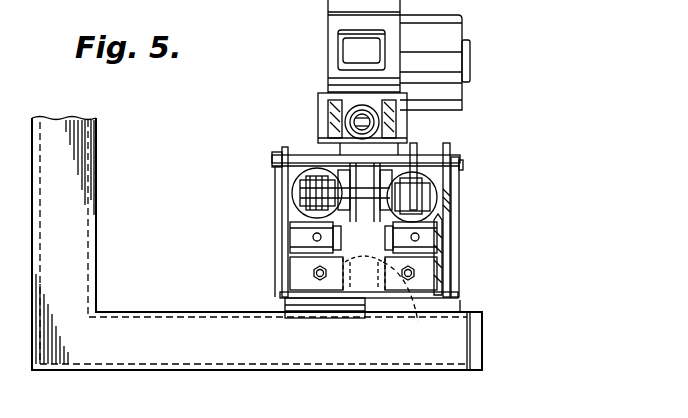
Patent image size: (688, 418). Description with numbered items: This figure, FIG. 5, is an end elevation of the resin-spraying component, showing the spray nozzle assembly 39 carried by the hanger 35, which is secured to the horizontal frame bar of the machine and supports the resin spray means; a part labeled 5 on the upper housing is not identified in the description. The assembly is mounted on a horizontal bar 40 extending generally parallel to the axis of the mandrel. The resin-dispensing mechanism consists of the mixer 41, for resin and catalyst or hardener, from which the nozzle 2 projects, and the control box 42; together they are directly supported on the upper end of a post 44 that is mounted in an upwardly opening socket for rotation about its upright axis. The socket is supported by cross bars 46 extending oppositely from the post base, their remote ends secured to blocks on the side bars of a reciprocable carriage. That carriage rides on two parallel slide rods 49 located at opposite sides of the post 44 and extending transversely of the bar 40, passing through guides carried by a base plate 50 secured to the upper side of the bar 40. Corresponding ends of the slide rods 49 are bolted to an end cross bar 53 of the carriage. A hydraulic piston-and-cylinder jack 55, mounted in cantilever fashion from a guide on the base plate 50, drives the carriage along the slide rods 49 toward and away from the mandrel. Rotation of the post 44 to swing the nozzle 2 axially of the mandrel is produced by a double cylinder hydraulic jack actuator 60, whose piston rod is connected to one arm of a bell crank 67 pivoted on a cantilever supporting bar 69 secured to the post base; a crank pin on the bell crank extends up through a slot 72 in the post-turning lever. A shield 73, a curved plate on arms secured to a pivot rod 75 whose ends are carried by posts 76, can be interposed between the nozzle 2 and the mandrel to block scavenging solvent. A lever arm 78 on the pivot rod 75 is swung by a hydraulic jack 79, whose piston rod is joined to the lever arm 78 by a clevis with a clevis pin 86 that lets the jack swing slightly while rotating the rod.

The nozzle 2 is at (340, 112).
The housing 5 is at (338, 33).
The hanger 35 is at (93, 226).
The spray nozzle assembly 39 is at (505, 77).
The horizontal bar 40 is at (173, 314).
The mixer 41 is at (405, 123).
The control box 42 is at (326, 94).
The post 44 is at (420, 172).
The cross bars 46 is at (290, 236).
The slide rods 49 is at (303, 276).
The base plate 50 is at (482, 311).
The end cross bar 53 is at (440, 256).
The hydraulic piston-and-cylinder jack 55 is at (416, 320).
The double cylinder hydraulic jack actuator 60 is at (298, 196).
The bell crank 67 is at (327, 156).
The supporting bar 69 is at (298, 209).
The slot 72 is at (348, 168).
The shield 73 is at (334, 317).
The pivot rod 75 is at (284, 172).
The posts 76 is at (290, 183).
The lever arm 78 is at (414, 152).
The hydraulic jack 79 is at (433, 193).
The clevis pin 86 is at (441, 216).